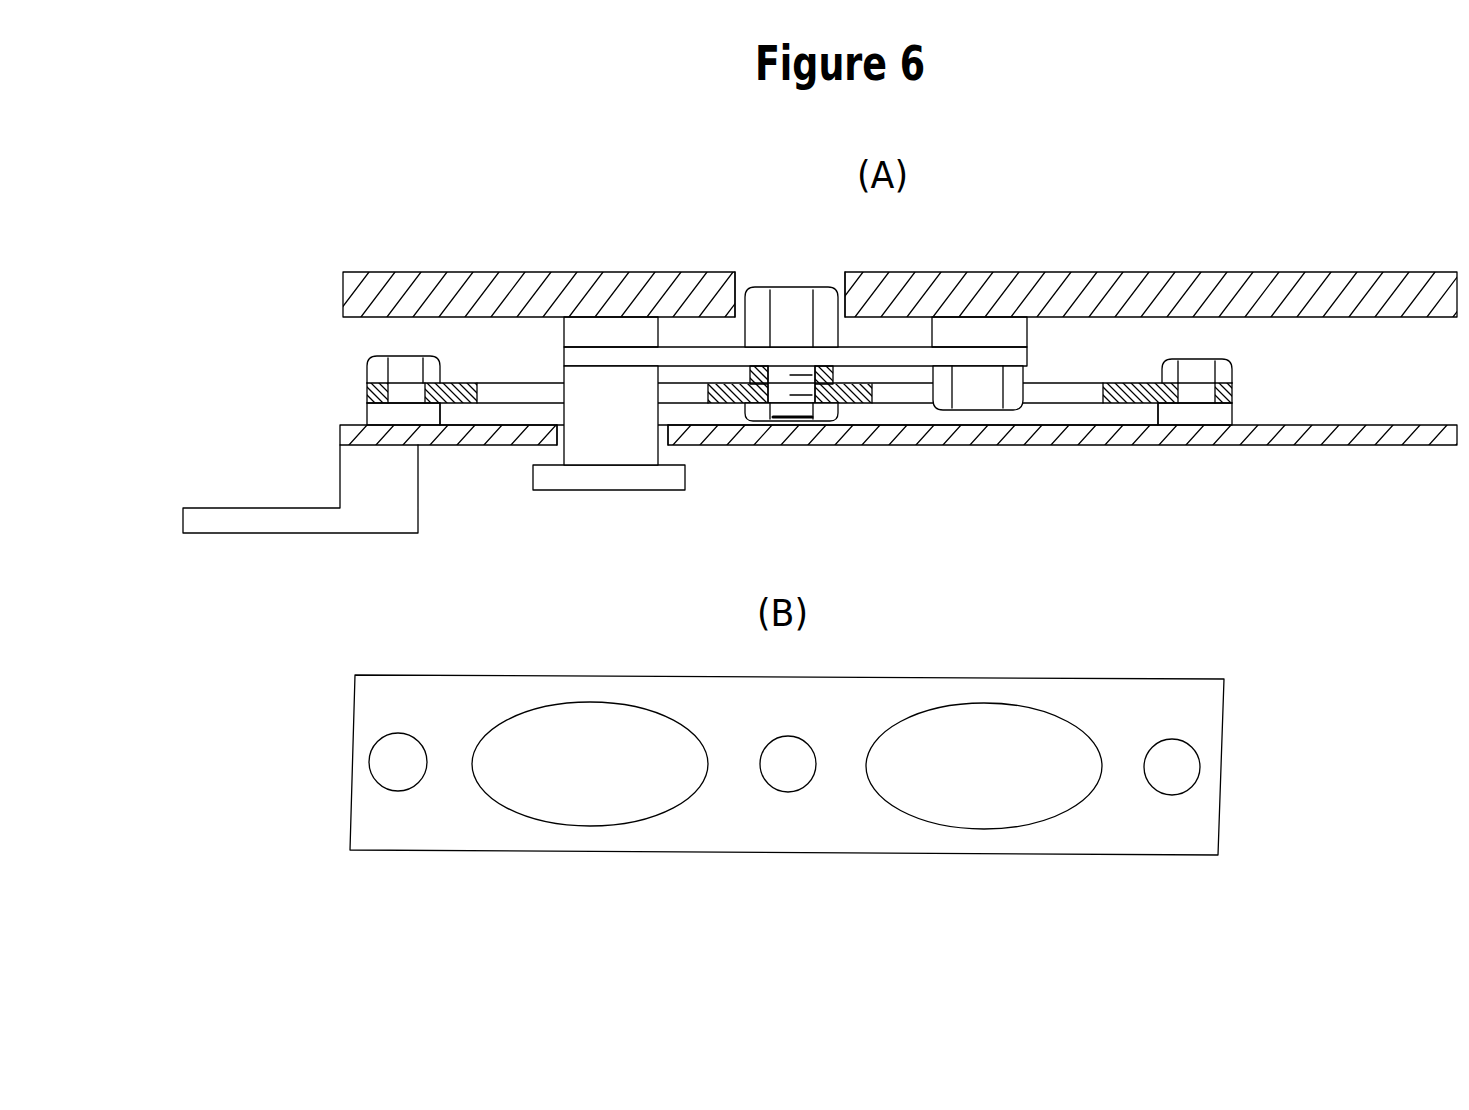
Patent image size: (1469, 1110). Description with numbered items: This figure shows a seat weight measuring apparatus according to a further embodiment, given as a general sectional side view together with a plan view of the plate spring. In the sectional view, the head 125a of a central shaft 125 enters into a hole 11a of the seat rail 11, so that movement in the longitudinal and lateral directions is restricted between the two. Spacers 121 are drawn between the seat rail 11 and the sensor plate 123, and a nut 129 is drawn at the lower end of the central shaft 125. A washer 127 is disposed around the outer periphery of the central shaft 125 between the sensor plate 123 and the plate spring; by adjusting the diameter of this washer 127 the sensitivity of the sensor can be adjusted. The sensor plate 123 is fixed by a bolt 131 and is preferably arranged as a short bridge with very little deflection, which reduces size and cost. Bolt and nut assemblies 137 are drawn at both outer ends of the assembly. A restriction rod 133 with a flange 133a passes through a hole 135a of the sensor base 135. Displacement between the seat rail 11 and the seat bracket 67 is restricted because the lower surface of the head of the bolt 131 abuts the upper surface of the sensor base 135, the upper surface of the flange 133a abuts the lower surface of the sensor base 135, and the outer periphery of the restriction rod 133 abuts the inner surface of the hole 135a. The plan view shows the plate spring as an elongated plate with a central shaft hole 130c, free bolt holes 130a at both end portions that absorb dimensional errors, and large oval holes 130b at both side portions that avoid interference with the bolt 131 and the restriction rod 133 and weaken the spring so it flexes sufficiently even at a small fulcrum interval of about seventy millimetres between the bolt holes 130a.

The seat rail 11 is at (530, 269).
The hole of seat rail 11a is at (843, 287).
The spacer 121 is at (582, 334).
The sensor plate 123 is at (680, 353).
The central shaft 125 is at (787, 367).
The head of central shaft 125a is at (757, 303).
The washer 127 is at (842, 380).
The nut 129 is at (798, 408).
The bolt holes 130a is at (395, 782).
The large oval hole 130b is at (575, 825).
The central shaft hole 130c is at (765, 778).
The bolt 131 is at (1013, 377).
The restriction rod 133 is at (583, 407).
The flange of restriction rod 133a is at (600, 482).
The sensor base 135 is at (977, 443).
The hole of sensor base 135a is at (655, 433).
The bolt and nut assembly 137 is at (363, 410).
The seat bracket 67 is at (352, 475).